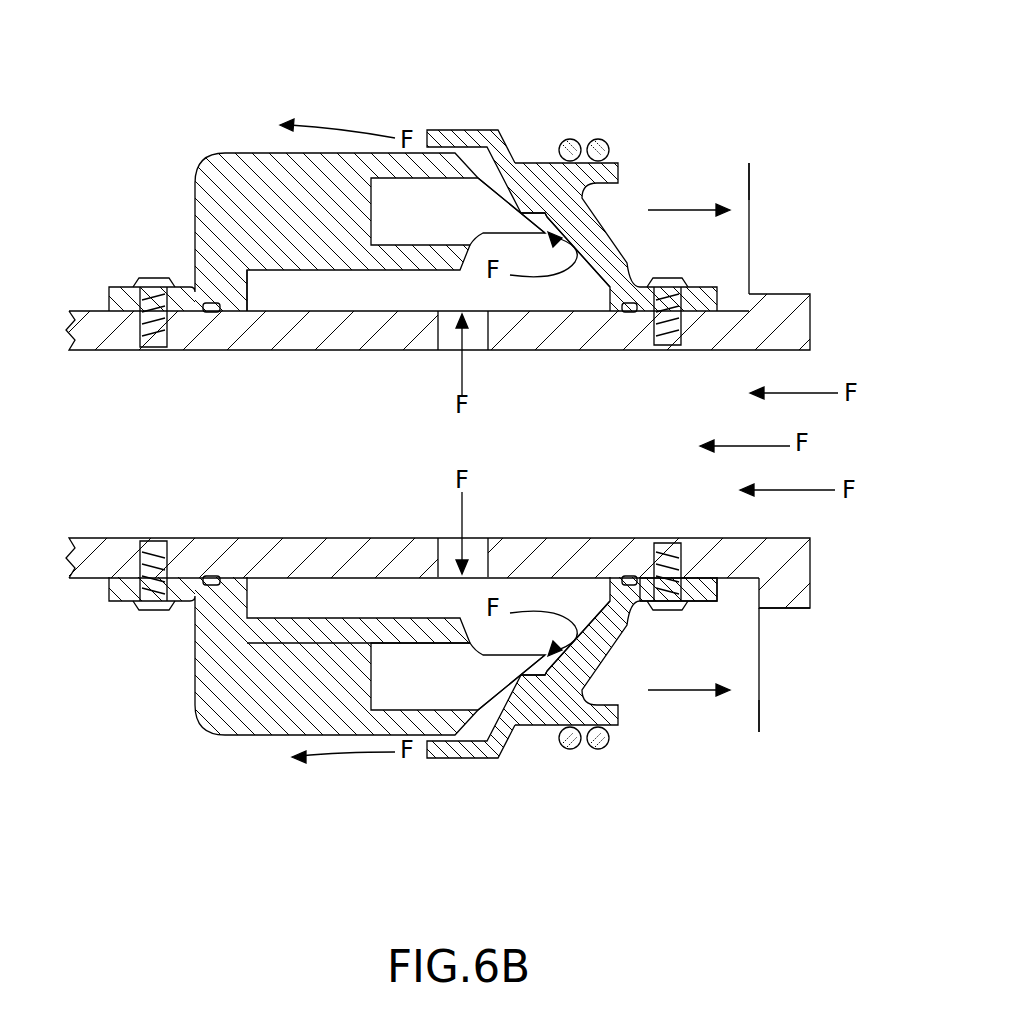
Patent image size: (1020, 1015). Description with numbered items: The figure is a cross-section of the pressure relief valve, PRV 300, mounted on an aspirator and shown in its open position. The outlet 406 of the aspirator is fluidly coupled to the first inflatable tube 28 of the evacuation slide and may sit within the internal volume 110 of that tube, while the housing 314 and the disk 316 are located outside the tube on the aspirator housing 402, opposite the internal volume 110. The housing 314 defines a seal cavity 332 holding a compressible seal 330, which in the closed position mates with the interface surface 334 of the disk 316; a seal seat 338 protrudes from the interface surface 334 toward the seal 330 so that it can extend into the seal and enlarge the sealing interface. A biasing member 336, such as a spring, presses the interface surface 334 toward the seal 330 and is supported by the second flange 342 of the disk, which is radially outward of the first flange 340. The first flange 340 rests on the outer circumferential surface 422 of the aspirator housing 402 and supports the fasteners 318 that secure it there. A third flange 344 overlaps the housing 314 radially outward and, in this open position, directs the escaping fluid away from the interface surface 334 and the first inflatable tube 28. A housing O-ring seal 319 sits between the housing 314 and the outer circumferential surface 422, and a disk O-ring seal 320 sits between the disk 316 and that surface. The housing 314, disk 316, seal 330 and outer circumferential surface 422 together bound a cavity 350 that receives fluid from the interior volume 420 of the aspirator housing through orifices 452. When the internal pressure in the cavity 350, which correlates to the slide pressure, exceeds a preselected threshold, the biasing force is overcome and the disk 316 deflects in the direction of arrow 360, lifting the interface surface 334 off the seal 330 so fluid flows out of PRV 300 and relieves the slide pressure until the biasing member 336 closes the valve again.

The pressure relief valve 300 is at (336, 98).
The housing 314 is at (278, 175).
The third flange 344 is at (440, 128).
The seal seat 338 is at (534, 209).
The second flange 342 is at (548, 210).
The biasing member 336 is at (598, 139).
The outer circumferential surface 422 is at (93, 310).
The fasteners 318 is at (160, 286).
The first inflatable tube 28 is at (748, 170).
The internal volume 110 is at (835, 213).
The arrow 360 is at (669, 449).
The disk 316 is at (605, 252).
The seal 330 is at (457, 224).
The cavity 350 is at (459, 300).
The housing O-ring seal 319 is at (212, 313).
The orifices 452 is at (448, 340).
The interior volume 420 is at (144, 450).
The disk O-ring seal 320 is at (630, 313).
The seal cavity 332 is at (383, 640).
The aspirator housing 402 is at (105, 556).
The first flange 340 is at (700, 604).
The outlet 406 is at (805, 516).
The interface surface 334 is at (488, 722).